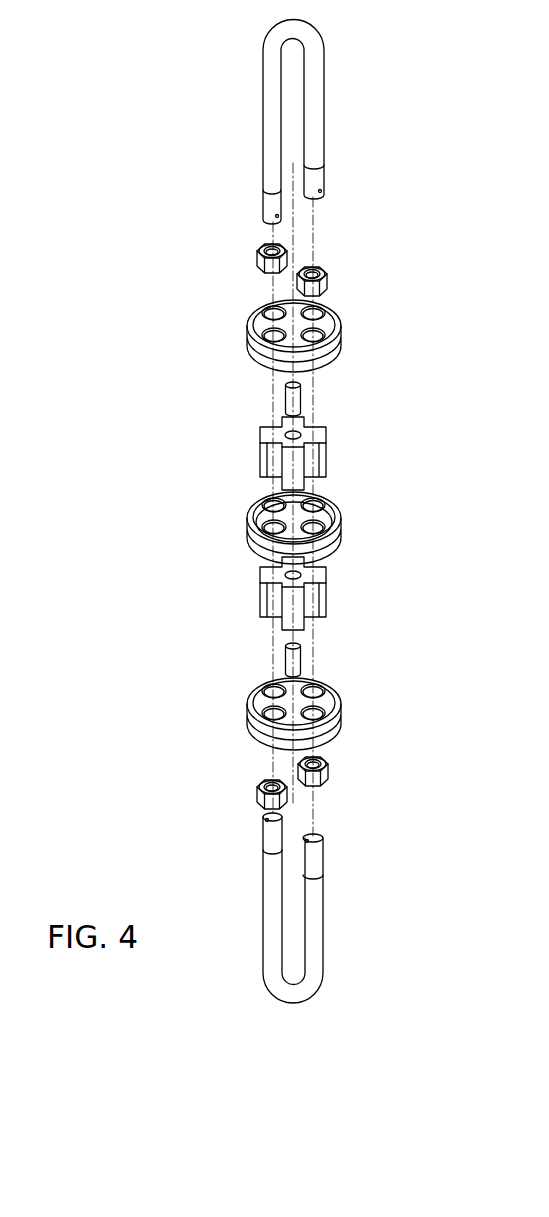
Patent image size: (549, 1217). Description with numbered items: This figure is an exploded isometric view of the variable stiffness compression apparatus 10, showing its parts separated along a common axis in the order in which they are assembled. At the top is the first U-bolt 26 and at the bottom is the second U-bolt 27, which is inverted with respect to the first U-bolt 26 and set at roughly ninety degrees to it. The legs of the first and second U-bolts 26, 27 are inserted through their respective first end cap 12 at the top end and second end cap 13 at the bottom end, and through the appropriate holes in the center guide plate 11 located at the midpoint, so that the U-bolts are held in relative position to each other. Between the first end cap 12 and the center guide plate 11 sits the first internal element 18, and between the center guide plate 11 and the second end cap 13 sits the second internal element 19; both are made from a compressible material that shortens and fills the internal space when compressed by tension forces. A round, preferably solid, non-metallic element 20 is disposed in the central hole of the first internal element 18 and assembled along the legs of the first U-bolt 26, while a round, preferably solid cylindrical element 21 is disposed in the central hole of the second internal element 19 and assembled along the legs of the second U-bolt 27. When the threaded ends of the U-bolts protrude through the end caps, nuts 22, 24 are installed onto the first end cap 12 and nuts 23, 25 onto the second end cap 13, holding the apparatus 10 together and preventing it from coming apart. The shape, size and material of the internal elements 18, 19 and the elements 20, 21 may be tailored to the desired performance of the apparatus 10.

The compression apparatus 10 is at (128, 378).
The center guide plate 11 is at (252, 533).
The first end cap 12 is at (255, 347).
The second end cap 13 is at (252, 725).
The first internal element 18 is at (325, 455).
The second internal element 19 is at (325, 602).
The round non-metallic element 20 is at (299, 402).
The round cylindrical element 21 is at (299, 655).
The nut 22 is at (327, 282).
The nut 23 is at (327, 780).
The nut 24 is at (258, 260).
The nut 25 is at (267, 802).
The first U-bolt 26 is at (315, 100).
The second U-bolt 27 is at (317, 950).